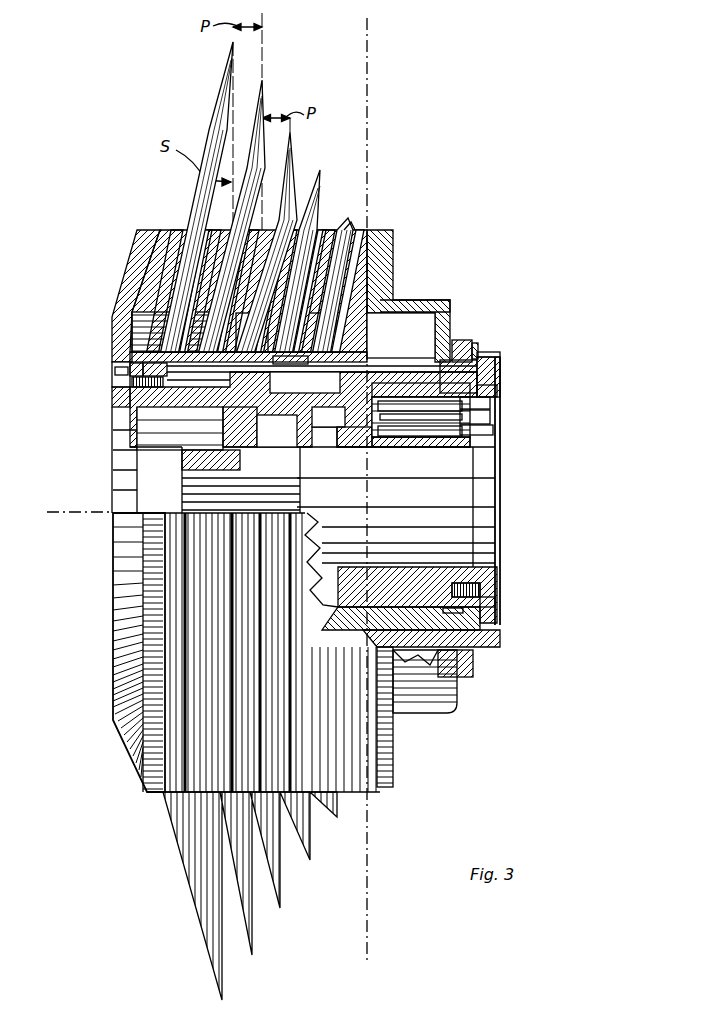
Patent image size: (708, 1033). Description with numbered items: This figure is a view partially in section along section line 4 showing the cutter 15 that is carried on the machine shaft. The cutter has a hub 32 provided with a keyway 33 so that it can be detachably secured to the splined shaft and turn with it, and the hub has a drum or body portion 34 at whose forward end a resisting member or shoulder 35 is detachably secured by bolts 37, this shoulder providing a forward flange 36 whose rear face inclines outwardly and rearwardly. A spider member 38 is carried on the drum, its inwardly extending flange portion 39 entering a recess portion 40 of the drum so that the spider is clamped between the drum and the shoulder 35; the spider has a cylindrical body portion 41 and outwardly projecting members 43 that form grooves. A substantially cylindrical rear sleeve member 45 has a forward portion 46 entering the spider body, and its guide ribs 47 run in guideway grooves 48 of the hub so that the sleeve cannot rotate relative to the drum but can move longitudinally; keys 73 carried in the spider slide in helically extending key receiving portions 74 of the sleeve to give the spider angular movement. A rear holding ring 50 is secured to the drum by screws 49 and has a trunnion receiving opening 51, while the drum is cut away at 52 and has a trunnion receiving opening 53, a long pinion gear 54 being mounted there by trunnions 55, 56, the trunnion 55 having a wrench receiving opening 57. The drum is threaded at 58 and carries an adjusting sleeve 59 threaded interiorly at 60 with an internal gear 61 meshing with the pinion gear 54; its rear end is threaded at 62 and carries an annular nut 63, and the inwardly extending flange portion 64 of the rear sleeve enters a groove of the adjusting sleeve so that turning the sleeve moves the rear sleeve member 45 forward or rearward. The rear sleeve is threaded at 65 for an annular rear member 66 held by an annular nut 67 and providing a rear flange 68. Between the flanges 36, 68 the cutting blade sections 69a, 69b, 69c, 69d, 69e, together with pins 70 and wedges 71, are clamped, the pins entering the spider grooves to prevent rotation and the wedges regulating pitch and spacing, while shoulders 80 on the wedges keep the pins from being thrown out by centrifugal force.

The section line 4- 4 is at (338, 957).
The cutter 15 is at (148, 876).
The hub 32 is at (182, 465).
The keyway 33 is at (207, 499).
The drum or body portion 34 is at (135, 412).
The resisting member or shoulder 35 is at (130, 357).
The forward flange 36 is at (122, 262).
The bolts 37 is at (118, 392).
The spider member 38 is at (118, 335).
The inwardly extending flange portion 39 is at (130, 368).
The recess portion 40 is at (128, 378).
The cylindrical body portion 41 is at (355, 350).
The outwardly projecting members 43 is at (387, 300).
The rear sleeve member 45 is at (480, 652).
The forward portion 46 is at (330, 373).
The guide ribs 47 is at (286, 383).
The guideway grooves 48 is at (180, 409).
The screws 49 is at (492, 603).
The rear holding ring 50 is at (493, 573).
The trunnion receiving opening 51 is at (495, 430).
The cut away space 52 is at (393, 436).
The trunnion receiving opening 53 is at (360, 446).
The pinion gear 54 is at (423, 434).
The trunnion 55 is at (468, 448).
The trunnion 56 is at (337, 446).
The wrench receiving opening 57 is at (488, 422).
The screw threads 58 is at (308, 408).
The adjusting sleeve 59 is at (472, 368).
The interior threads 60 is at (395, 395).
The internal gear 61 is at (490, 404).
The screw threaded portion 62 is at (492, 390).
The annular nut 63 is at (498, 648).
The inwardly extending flange portion 64 is at (500, 362).
The exterior threads 65 is at (478, 357).
The annular rear member 66 is at (456, 320).
The annular nut 67 is at (476, 342).
The rear flange 68 is at (385, 255).
The cutting blade section 69a is at (233, 65).
The cutting blade section 69b is at (262, 104).
The cutting blade section 69c is at (298, 152).
The cutting blade section 69d is at (327, 226).
The cutting blade section 69e is at (352, 218).
The pins 70 is at (368, 228).
The wedges 71 is at (390, 228).
The keys 73 is at (305, 352).
The helically extending key receiving portions 74 is at (226, 417).
The shoulders 80 is at (348, 222).